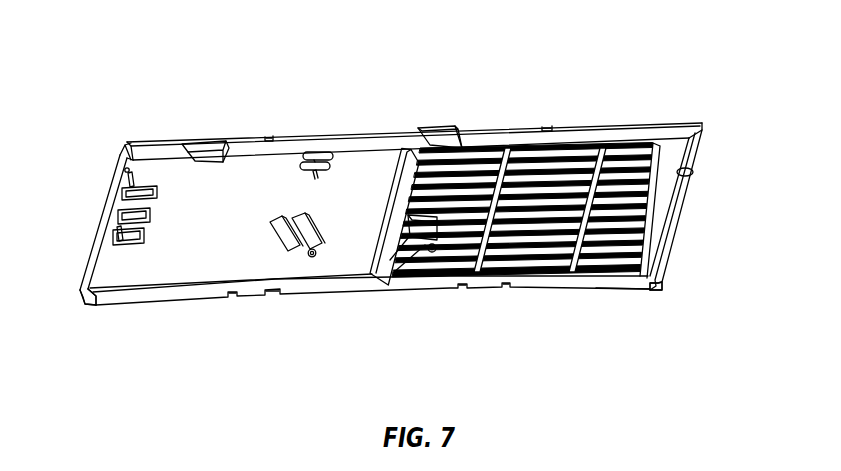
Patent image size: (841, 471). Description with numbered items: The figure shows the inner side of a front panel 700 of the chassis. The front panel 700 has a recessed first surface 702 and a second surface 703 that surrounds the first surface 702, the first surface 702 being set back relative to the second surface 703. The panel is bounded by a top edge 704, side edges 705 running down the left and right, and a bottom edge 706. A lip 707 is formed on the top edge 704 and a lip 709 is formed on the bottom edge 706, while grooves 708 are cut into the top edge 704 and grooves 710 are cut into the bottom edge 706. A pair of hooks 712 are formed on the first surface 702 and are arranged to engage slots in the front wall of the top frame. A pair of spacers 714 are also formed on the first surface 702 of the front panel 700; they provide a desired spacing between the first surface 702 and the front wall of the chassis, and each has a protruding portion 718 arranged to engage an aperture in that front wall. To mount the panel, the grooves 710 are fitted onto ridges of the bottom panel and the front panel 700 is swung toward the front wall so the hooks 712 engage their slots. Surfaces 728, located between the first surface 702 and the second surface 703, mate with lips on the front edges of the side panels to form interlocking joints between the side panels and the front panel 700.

The front panel 700 is at (226, 51).
The first surface 702 is at (230, 230).
The second surface 703 is at (163, 296).
The top edge 704 is at (610, 103).
The side wall 705 is at (105, 210).
The bottom edge 706 is at (593, 284).
The lip 707 is at (375, 127).
The groove 708 is at (270, 136).
The lip 709 is at (145, 305).
The groove 710 is at (227, 300).
The hook 712 is at (205, 142).
The spacer 714 is at (408, 223).
The protruding portion 718 is at (315, 257).
The surface 728 is at (120, 155).